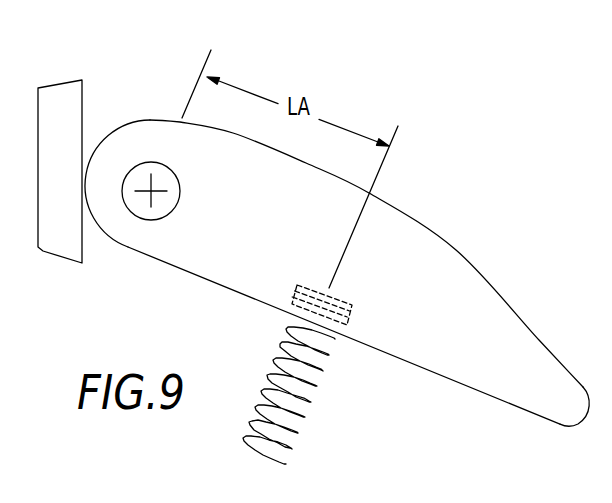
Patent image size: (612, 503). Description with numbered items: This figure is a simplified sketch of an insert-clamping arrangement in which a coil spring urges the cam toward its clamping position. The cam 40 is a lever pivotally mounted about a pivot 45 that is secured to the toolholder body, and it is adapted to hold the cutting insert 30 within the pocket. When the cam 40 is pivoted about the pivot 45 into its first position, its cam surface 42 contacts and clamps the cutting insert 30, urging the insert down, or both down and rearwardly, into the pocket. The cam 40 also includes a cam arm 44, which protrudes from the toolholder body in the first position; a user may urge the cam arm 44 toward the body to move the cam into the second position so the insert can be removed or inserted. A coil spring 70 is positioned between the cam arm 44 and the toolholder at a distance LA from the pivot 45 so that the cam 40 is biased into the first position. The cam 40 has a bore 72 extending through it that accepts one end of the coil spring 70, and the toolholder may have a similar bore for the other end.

The cutting insert 30 is at (60, 89).
The cam 40 is at (426, 247).
The cam surface 42 is at (100, 140).
The cam arm 44 is at (496, 314).
The pivot 45 is at (165, 183).
The coil spring 70 is at (305, 398).
The bore 72 is at (355, 322).